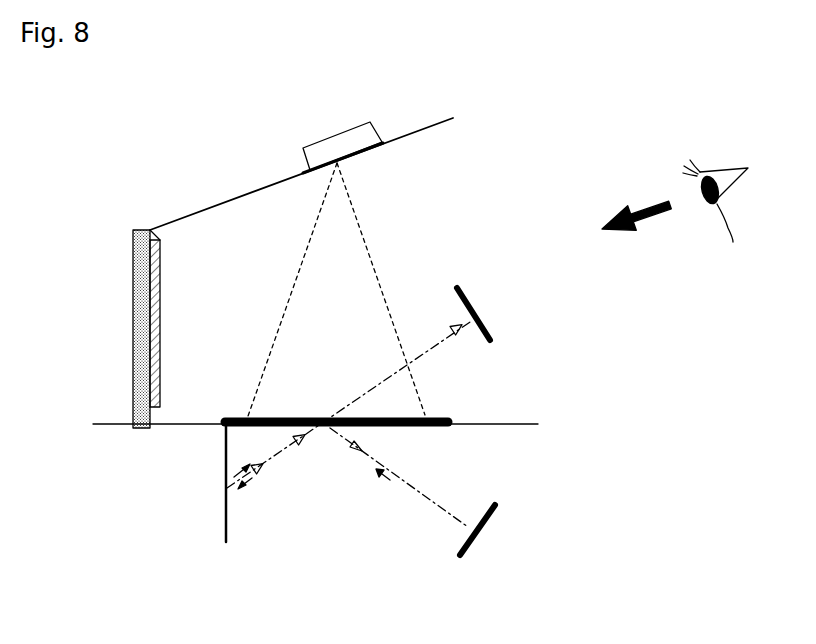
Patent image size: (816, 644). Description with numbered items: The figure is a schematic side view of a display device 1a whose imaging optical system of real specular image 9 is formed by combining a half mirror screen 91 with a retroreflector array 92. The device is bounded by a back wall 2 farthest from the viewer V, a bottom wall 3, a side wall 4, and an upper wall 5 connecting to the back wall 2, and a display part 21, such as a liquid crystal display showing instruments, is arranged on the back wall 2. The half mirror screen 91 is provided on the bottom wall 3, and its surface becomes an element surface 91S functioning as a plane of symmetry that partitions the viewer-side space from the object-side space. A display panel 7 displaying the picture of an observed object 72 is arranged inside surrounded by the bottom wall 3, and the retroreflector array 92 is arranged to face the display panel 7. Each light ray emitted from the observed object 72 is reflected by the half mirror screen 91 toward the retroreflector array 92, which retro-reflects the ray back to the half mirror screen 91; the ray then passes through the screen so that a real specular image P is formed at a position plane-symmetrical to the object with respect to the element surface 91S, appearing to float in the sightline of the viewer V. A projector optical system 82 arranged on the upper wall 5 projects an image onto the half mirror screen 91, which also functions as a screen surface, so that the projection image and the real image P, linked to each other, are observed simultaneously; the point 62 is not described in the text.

The display device 1a is at (221, 103).
The back wall 2 is at (140, 230).
The display part 21 is at (160, 240).
The upper wall 5 is at (453, 118).
The projector optical system 82 is at (370, 125).
The side wall 4 is at (436, 181).
The half mirror screen 91 is at (418, 428).
The bottom wall 3 is at (518, 424).
The incident point 62 is at (298, 413).
The element surface 91S is at (193, 425).
The retroreflector array 92 is at (226, 542).
The imaging optical system of real specular image 9 is at (317, 497).
The real specular image P is at (485, 312).
The display panel 7 is at (468, 547).
The observed object 72 is at (470, 528).
The viewer V is at (675, 211).